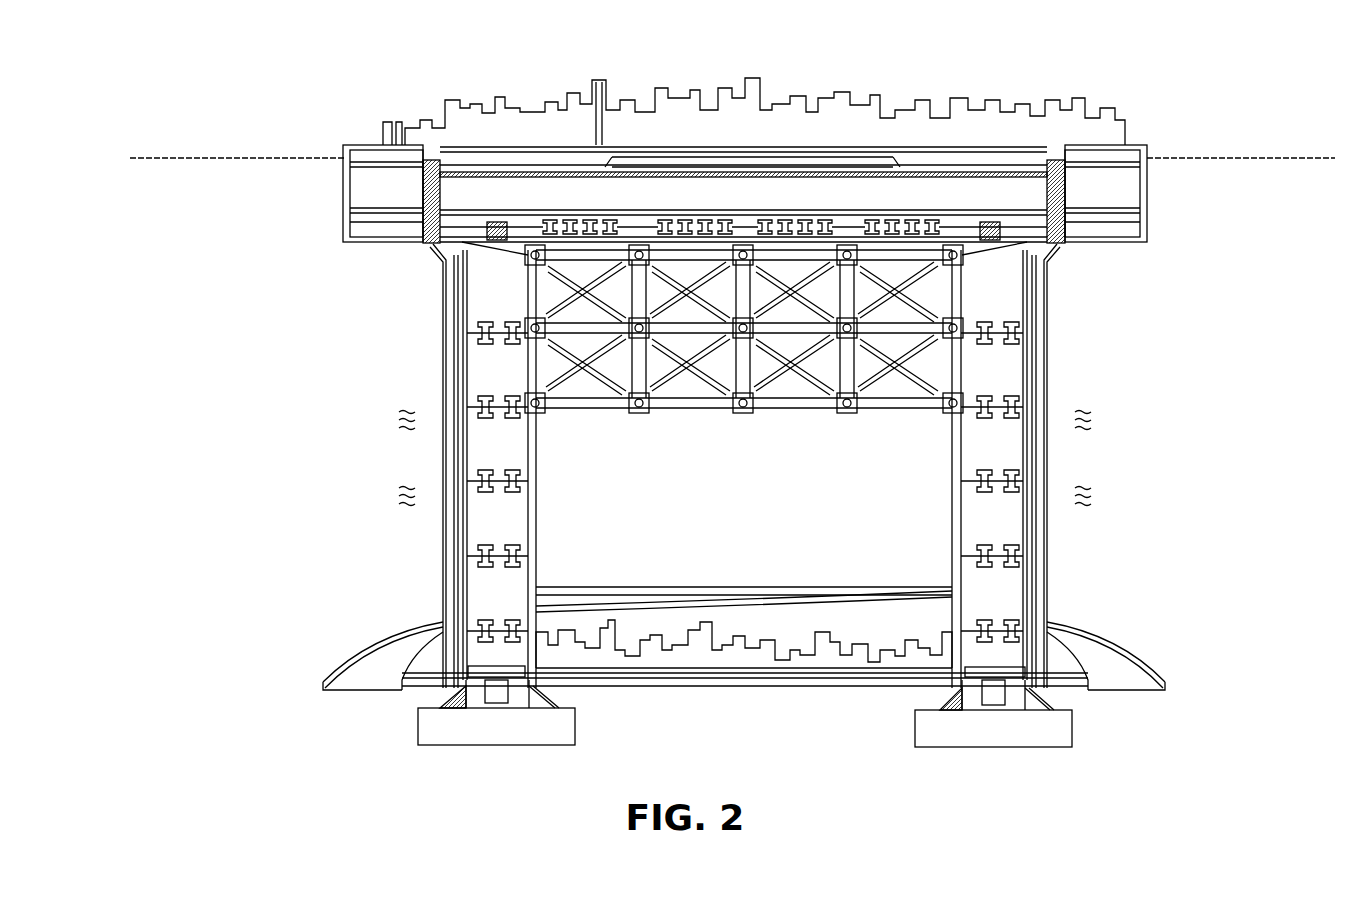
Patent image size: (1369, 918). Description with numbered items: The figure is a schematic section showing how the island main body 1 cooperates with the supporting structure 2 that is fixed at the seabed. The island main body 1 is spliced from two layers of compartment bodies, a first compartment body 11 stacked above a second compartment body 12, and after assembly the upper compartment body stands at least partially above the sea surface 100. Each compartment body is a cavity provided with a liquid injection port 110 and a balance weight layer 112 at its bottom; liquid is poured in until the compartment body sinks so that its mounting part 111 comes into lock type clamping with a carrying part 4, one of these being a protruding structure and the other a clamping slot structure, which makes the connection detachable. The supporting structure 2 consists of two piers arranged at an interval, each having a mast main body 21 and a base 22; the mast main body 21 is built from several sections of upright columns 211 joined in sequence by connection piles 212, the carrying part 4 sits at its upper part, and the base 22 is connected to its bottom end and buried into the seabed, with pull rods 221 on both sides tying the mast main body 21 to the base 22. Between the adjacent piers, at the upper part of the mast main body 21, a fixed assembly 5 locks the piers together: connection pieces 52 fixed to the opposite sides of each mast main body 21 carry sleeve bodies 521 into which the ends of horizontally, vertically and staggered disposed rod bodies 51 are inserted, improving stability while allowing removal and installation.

The sea surface 100 is at (200, 157).
The liquid injection port 110 is at (360, 144).
The island main body 1 is at (757, 177).
The first compartment body 11 is at (1104, 140).
The second compartment body 12 is at (1134, 184).
The mounting part 111 is at (911, 172).
The balance weight layer 112 is at (723, 170).
The carrying part 4 is at (602, 170).
The fixed assembly 5 is at (744, 370).
The rod body 51 is at (717, 394).
The connection piece 52 is at (664, 457).
The sleeve body 521 is at (762, 400).
The supporting structure 2 is at (762, 495).
The mast main body 21 is at (783, 466).
The upright column 211 is at (968, 444).
The connection pile 212 is at (975, 485).
The base 22 is at (745, 681).
The pull rod 221 is at (955, 695).